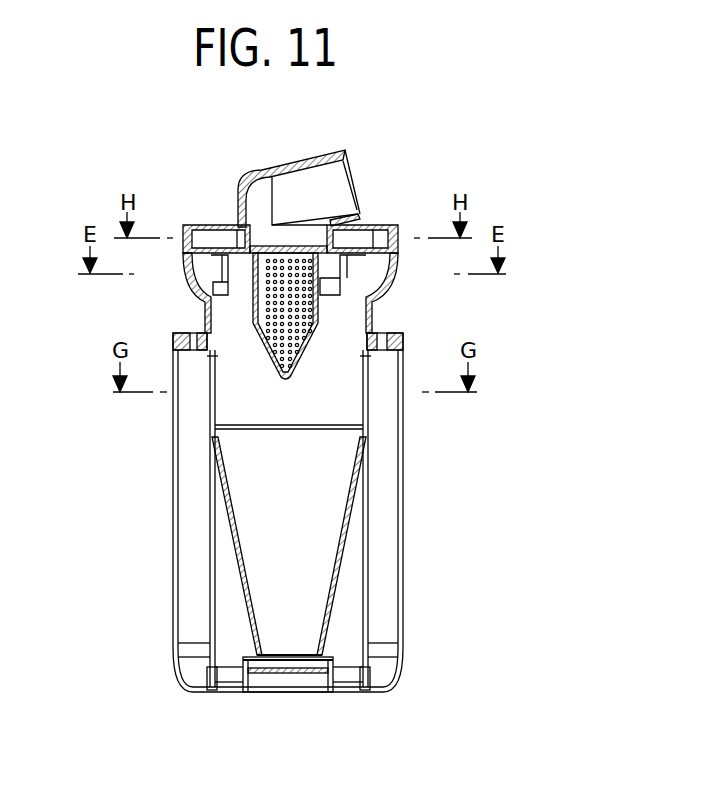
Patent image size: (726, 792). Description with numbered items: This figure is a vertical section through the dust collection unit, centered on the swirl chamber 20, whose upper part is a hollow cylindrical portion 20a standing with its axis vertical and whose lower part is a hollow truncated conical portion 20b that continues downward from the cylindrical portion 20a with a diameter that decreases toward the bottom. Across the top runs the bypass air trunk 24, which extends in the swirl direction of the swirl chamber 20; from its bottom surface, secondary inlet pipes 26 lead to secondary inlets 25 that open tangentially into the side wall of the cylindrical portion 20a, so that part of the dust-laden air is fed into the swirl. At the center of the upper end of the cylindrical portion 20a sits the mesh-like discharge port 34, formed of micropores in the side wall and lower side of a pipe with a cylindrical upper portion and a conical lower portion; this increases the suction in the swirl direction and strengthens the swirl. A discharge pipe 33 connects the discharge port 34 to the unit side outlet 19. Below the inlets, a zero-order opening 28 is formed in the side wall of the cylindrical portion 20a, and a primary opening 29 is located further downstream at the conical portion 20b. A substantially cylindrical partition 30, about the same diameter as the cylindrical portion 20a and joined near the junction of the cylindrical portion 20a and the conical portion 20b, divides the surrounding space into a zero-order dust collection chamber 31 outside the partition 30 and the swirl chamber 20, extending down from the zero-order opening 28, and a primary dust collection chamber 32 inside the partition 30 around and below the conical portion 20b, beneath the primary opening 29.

The unit side outlet 19 is at (358, 168).
The swirl chamber 20 is at (364, 531).
The cylindrical portion 20a is at (340, 408).
The conical portion 20b is at (330, 496).
The bypass air trunk 24 is at (183, 226).
The secondary inlet 25 is at (212, 300).
The secondary inlet pipe 26 is at (200, 270).
The zero-order opening 28 is at (213, 415).
The primary opening 29 is at (294, 655).
The partition 30 is at (212, 593).
The zero-order dust collection chamber 31 is at (195, 493).
The primary dust collection chamber 32 is at (338, 649).
The discharge pipe 33 is at (295, 193).
The discharge port 34 is at (236, 227).